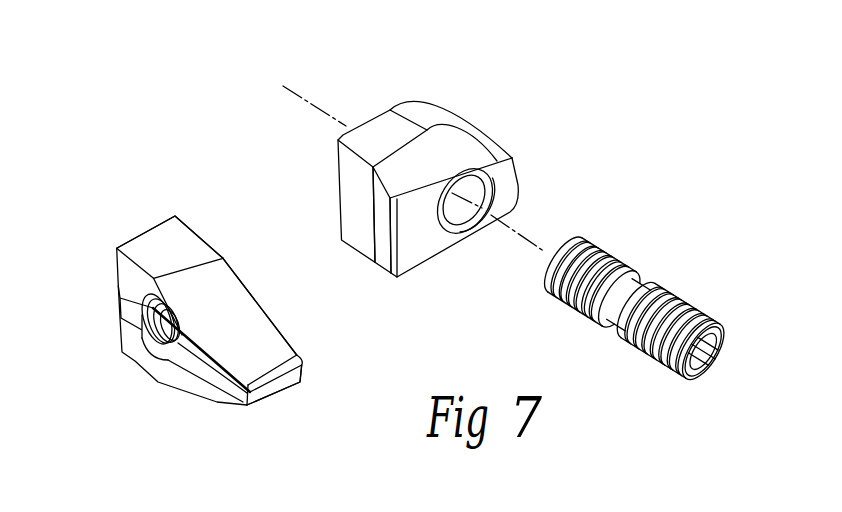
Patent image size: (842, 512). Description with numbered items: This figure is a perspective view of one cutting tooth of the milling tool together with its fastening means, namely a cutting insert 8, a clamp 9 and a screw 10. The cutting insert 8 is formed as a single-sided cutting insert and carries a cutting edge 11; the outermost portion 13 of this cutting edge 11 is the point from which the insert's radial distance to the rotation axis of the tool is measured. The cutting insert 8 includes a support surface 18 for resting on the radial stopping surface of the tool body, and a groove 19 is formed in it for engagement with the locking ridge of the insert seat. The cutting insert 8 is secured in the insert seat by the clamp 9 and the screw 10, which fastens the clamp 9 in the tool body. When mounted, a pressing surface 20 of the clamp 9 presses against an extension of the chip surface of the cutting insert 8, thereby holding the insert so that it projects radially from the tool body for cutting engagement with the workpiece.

The cutting insert 8 is at (117, 208).
The clamp 9 is at (508, 98).
The screw 10 is at (672, 263).
The cutting edge 11 is at (272, 318).
The outermost portion of the cutting edge 13 is at (305, 365).
The support surface 18 is at (156, 216).
The groove 19 is at (226, 386).
The pressing surface 20 is at (385, 247).